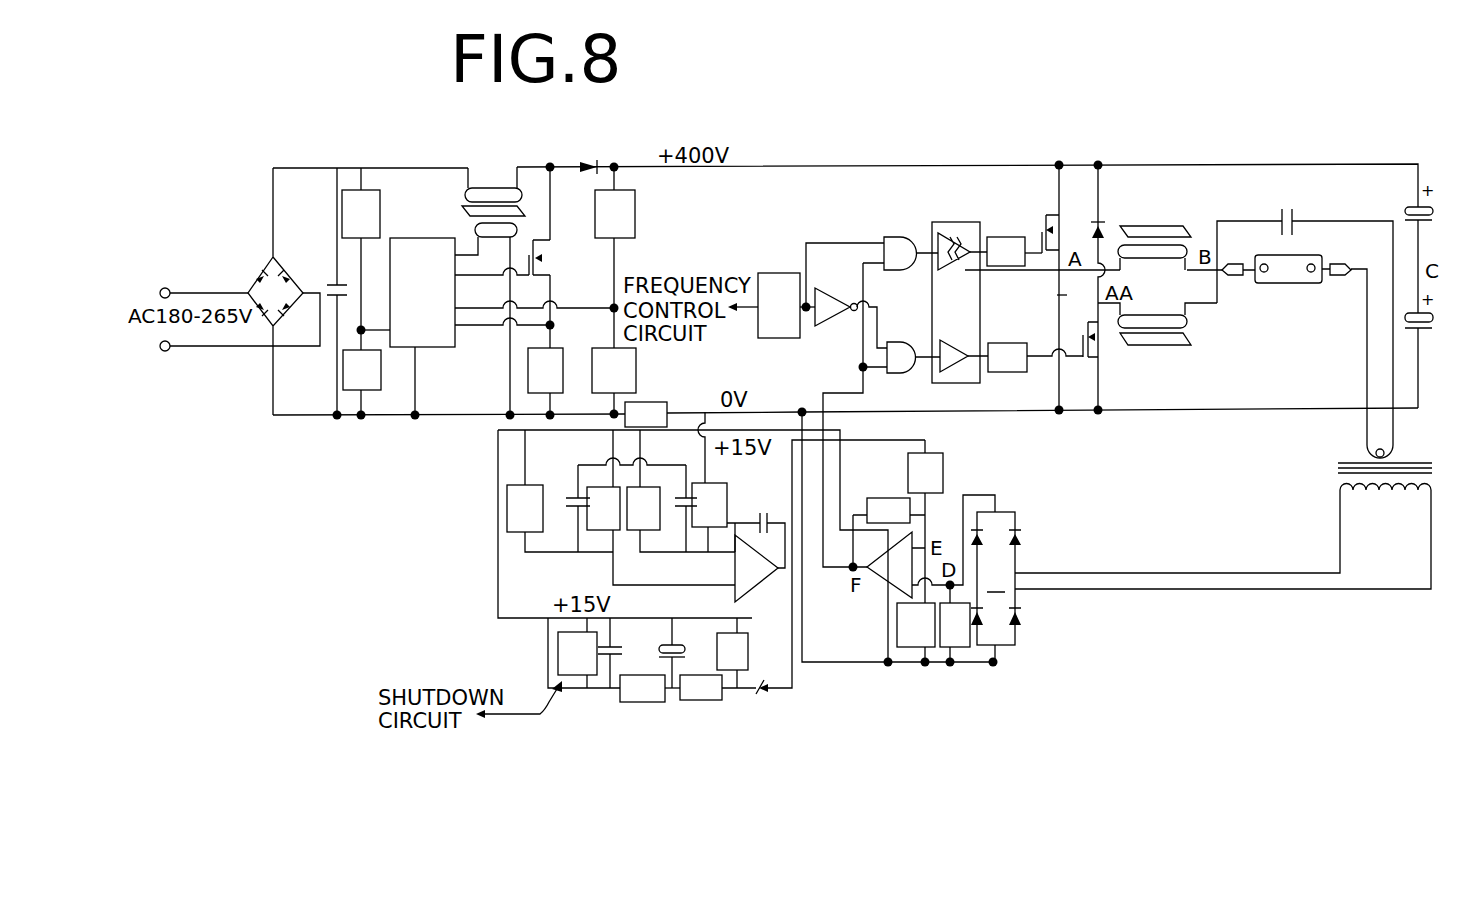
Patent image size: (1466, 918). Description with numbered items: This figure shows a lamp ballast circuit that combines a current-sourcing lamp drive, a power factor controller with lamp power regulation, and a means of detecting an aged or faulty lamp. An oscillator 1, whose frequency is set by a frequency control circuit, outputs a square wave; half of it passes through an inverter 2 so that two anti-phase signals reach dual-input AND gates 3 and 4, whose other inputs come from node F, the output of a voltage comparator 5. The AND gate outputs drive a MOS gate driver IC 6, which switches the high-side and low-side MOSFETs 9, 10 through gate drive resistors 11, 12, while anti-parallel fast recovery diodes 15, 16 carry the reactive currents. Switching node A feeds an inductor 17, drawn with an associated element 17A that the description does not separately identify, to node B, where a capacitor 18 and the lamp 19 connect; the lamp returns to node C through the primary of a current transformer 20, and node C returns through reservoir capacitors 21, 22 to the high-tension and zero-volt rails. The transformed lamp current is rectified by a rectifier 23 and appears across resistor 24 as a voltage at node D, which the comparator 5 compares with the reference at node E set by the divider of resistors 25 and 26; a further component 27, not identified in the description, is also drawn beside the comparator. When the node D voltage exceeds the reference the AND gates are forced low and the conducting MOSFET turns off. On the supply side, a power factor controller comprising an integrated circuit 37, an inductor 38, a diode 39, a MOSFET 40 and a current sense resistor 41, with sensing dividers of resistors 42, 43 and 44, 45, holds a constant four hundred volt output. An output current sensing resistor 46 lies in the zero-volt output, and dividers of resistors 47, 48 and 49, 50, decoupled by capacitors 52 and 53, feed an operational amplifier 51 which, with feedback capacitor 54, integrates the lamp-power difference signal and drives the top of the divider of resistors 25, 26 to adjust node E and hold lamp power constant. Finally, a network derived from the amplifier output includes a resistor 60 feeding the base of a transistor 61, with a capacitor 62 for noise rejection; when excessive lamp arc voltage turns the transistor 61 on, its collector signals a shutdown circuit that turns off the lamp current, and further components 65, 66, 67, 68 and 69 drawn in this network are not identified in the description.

The oscillator 1 is at (786, 305).
The inverter 2 is at (851, 318).
The AND gate 3 is at (911, 253).
The AND gate 4 is at (913, 357).
The voltage comparator 5 is at (908, 565).
The MOS gate driver IC 6 is at (960, 302).
The MOSFET 9 is at (1041, 287).
The MOSFET 10 is at (1080, 336).
The gate drive resistor 11 is at (1014, 251).
The gate drive resistor 12 is at (1035, 357).
The fast recovery diode 15 is at (1086, 287).
The fast recovery diode 16 is at (1050, 308).
The inductor 17 is at (1170, 256).
The inductor winding 17A is at (1157, 319).
The capacitor 18 is at (1305, 316).
The lamp 19 is at (1294, 350).
The current transformer 20 is at (1223, 517).
The capacitor 21 is at (1432, 258).
The capacitor 22 is at (1429, 360).
The rectifier 23 is at (996, 587).
The resistor 24 is at (955, 623).
The resistor 25 is at (916, 632).
The resistor 26 is at (925, 521).
The resistor 27 is at (889, 532).
The integrated circuit 37 is at (422, 326).
The inductor 38 is at (490, 291).
The diode 39 is at (586, 158).
The MOSFET 40 is at (550, 257).
The current sense resistor 41 is at (545, 381).
The resistor 42 is at (361, 259).
The resistor 43 is at (362, 382).
The resistor 44 is at (615, 257).
The resistor 45 is at (614, 381).
The output current sensing resistor 46 is at (646, 415).
The resistor 47 is at (560, 491).
The resistor 48 is at (661, 507).
The resistor 49 is at (681, 491).
The resistor 50 is at (709, 517).
The operational amplifier 51 is at (756, 568).
The capacitor 52 is at (616, 505).
The capacitor 53 is at (679, 508).
The capacitor 54 is at (756, 526).
The resistor 60 is at (577, 653).
The transistor 61 is at (527, 703).
The capacitor 62 is at (624, 653).
The switch 65 is at (840, 567).
The capacitor 66 is at (685, 653).
The resistor 67 is at (718, 688).
The resistor 68 is at (732, 653).
The resistor 69 is at (650, 688).